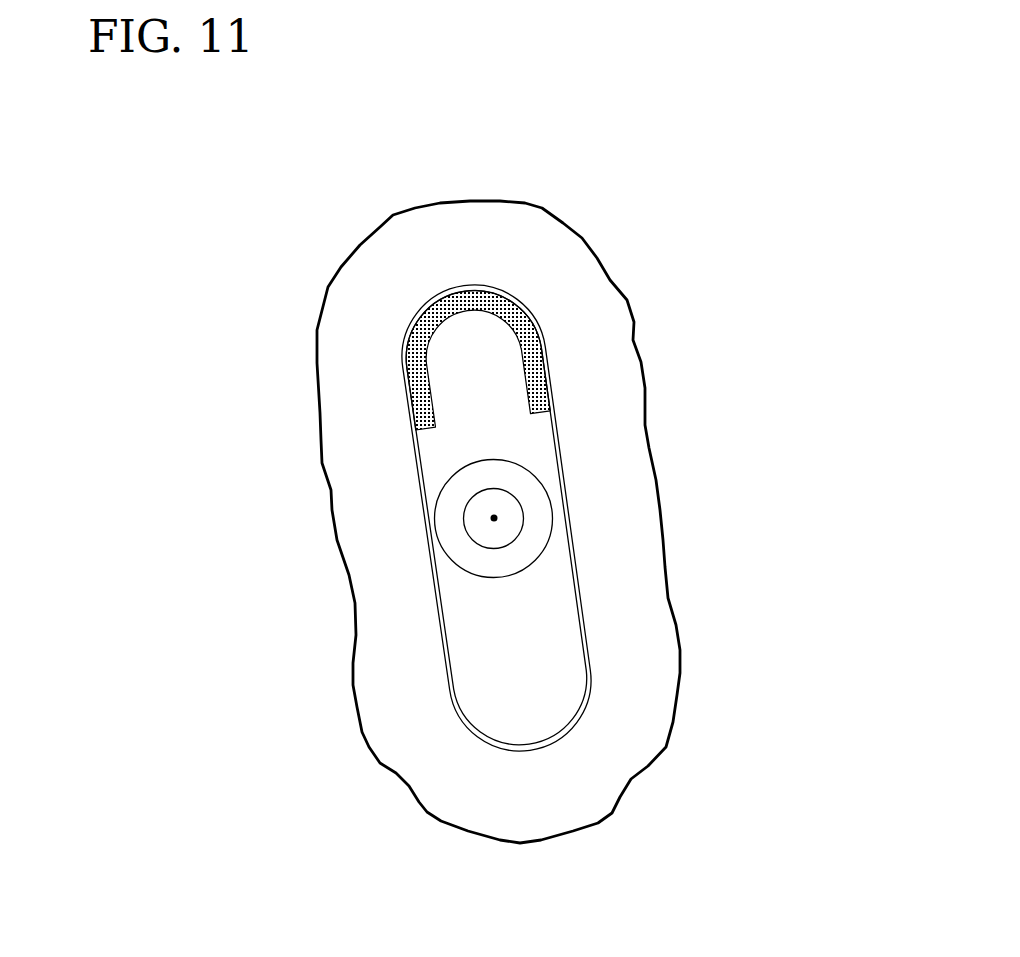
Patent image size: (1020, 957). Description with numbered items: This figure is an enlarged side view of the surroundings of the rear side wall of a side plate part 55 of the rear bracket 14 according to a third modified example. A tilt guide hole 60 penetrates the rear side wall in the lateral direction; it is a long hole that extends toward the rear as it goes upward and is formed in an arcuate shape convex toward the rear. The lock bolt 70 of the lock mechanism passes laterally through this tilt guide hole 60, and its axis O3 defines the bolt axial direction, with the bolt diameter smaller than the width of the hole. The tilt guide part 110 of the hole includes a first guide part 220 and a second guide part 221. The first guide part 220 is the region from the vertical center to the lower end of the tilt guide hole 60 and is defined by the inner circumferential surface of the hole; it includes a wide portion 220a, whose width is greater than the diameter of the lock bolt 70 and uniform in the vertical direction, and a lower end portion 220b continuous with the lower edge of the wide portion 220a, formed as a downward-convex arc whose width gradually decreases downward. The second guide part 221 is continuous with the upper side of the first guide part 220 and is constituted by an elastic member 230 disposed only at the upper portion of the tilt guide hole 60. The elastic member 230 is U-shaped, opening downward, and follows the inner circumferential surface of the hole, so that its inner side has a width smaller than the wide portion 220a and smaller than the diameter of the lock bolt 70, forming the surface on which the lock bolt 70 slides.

The rear bracket 14 is at (540, 202).
The side plate part 55 is at (417, 252).
The tilt guide part 110 is at (566, 428).
The tilt guide hole 60 is at (580, 626).
The elastic member 230 is at (515, 312).
The second guide part 221 is at (538, 360).
The lock bolt 70 is at (513, 517).
The axis O3 is at (490, 519).
The first guide part 220 is at (262, 617).
The wide portion 220a is at (438, 606).
The lower end portion 220b is at (518, 745).